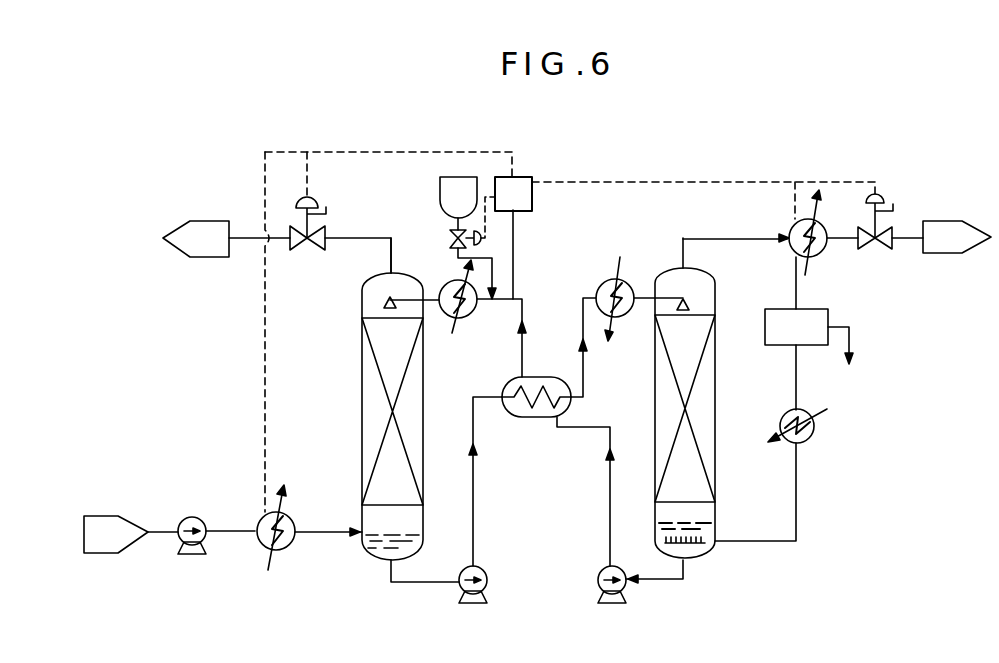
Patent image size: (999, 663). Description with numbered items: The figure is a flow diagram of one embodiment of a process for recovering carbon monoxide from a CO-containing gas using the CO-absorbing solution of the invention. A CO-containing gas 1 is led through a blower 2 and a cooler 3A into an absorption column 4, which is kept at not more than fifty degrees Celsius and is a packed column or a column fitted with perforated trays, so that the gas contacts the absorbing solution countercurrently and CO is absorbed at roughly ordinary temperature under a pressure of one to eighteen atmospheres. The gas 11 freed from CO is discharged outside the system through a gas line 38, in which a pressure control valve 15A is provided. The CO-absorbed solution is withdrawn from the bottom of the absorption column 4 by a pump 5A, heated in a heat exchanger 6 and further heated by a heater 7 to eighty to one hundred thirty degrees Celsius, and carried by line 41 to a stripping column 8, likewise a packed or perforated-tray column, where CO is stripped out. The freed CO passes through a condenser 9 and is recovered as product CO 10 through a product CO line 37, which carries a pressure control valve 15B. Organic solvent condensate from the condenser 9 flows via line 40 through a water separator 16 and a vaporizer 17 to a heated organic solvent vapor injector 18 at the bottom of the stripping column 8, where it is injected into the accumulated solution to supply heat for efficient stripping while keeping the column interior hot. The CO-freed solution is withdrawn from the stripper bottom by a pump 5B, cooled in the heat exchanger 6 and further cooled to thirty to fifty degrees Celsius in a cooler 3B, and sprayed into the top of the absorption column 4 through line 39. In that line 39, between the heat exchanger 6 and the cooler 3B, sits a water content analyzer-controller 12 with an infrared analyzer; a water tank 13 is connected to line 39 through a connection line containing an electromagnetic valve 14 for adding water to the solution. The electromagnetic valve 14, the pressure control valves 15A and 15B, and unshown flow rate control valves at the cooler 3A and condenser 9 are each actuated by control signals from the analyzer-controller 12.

The CO-containing gas 1 is at (101, 516).
The blower 2 is at (195, 517).
The cooler 3A is at (288, 552).
The cooler 3B is at (463, 326).
The absorption column 4 is at (362, 372).
The pump 5A is at (486, 581).
The pump 5B is at (598, 584).
The heat exchanger 6 is at (520, 419).
The heater 7 is at (618, 290).
The stripping column 8 is at (718, 392).
The condenser 9 is at (822, 224).
The product CO 10 is at (963, 221).
The gas freed from CO 11 is at (196, 210).
The water content analyzer-controller 12 is at (524, 177).
The water tank 13 is at (440, 180).
The electromagnetic valve 14 is at (450, 238).
The pressure control valve 15A is at (312, 201).
The pressure control valve 15B is at (877, 194).
The water separator 16 is at (832, 312).
The vaporizer 17 is at (817, 423).
The heated organic solvent vapor injector 18 is at (695, 546).
The product CO line 37 is at (713, 236).
The gas line 38 is at (338, 244).
The line 39 is at (544, 310).
The line 40 is at (800, 537).
The line 41 is at (579, 298).